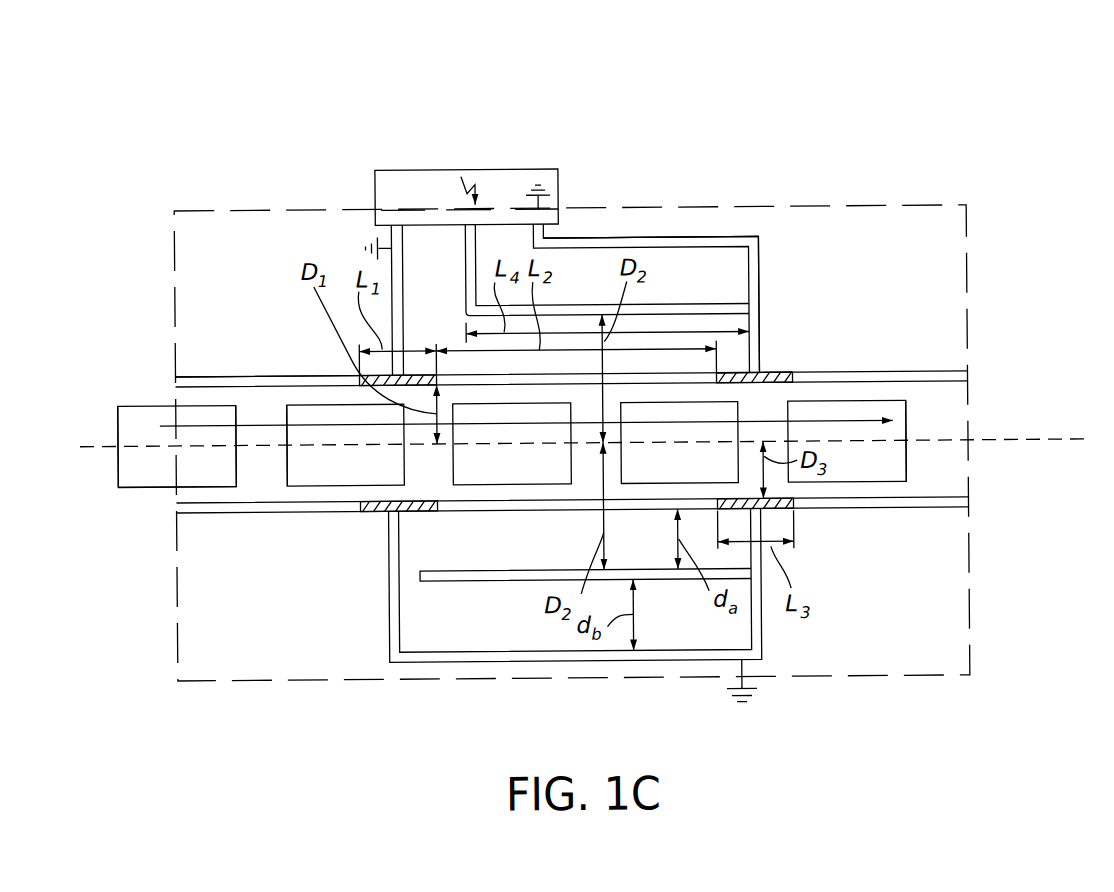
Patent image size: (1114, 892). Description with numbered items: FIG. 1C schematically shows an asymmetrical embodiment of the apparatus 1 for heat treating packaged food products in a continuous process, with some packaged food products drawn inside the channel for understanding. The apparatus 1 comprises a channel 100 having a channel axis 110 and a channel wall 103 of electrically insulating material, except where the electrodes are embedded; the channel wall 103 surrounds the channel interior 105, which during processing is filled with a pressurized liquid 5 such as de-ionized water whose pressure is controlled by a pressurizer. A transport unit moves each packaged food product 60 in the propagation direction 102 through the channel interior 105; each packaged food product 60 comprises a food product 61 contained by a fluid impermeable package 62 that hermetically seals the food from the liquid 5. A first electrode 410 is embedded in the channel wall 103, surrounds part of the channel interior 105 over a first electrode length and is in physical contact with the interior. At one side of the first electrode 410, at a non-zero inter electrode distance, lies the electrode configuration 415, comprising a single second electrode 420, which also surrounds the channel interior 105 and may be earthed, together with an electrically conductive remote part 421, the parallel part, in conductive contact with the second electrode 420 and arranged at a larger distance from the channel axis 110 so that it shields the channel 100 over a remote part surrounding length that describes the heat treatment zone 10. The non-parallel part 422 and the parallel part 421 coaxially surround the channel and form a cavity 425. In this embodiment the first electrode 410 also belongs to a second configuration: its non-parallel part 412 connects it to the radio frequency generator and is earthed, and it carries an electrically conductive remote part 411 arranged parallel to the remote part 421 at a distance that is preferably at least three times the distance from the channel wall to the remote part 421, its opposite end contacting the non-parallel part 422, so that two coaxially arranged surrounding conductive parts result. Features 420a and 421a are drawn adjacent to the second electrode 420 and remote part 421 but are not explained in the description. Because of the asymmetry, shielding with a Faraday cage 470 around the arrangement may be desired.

The apparatus 1 is at (940, 106).
The liquid 5 is at (260, 475).
The heat treatment zone 10 is at (590, 468).
The packaged food product 60 is at (139, 392).
The food product 61 is at (132, 421).
The package 62 is at (146, 488).
The channel 100 is at (262, 575).
The propagation direction 102 is at (687, 410).
The channel wall 103 is at (300, 374).
The channel interior 105 is at (260, 405).
The channel axis 110 is at (1022, 440).
The first electrode 410 is at (424, 374).
The electrically conductive remote part 411 is at (704, 231).
The non-parallel part of the first electrode 412 is at (405, 273).
The electrode configuration 415 is at (579, 281).
The second electrode 420 is at (779, 353).
The insulator surface 420a is at (780, 373).
The electrically conductive remote part 421 is at (727, 303).
The housing inner wall 421a is at (657, 305).
The non-parallel part 422 is at (763, 323).
The cavity 425 is at (651, 537).
The Faraday cage 470 is at (817, 686).